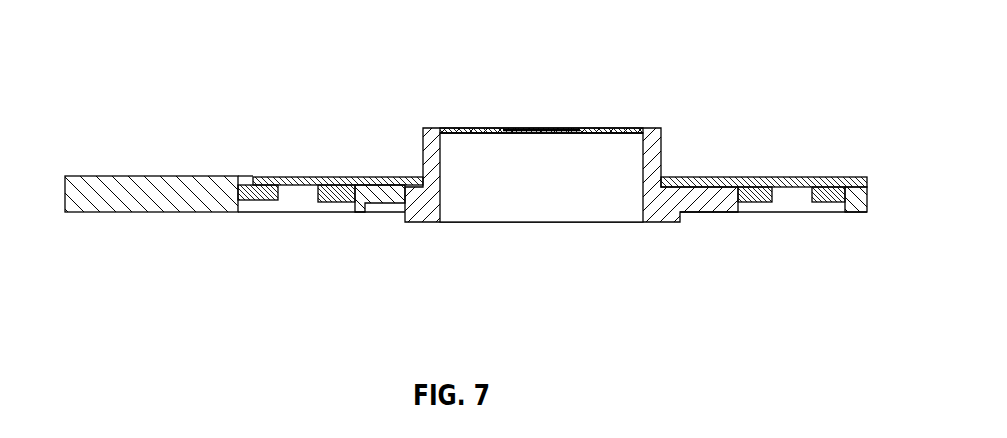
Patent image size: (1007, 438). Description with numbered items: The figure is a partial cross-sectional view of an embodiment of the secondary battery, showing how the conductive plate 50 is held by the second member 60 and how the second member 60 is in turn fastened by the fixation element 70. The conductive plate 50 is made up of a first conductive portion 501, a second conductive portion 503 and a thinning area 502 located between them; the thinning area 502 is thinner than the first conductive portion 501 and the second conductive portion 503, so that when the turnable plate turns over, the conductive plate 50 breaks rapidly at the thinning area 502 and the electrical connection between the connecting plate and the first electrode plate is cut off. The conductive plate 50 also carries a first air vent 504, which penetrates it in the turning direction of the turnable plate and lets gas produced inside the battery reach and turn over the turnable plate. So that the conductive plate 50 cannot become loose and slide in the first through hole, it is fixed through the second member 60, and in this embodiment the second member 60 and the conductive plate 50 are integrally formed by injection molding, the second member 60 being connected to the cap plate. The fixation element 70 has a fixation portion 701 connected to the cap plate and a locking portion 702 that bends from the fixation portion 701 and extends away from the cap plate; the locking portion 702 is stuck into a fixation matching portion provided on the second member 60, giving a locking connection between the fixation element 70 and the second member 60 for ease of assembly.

The conductive plate 50 is at (502, 114).
The first conductive portion 501 is at (482, 128).
The thinning area 502 is at (452, 133).
The second conductive portion 503 is at (423, 157).
The first air vent 504 is at (557, 127).
The second member 60 is at (195, 210).
The fixation element 70 is at (552, 255).
The fixation portion 701 is at (292, 187).
The locking portion 702 is at (332, 202).